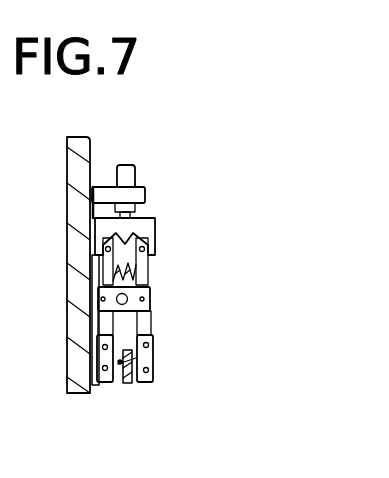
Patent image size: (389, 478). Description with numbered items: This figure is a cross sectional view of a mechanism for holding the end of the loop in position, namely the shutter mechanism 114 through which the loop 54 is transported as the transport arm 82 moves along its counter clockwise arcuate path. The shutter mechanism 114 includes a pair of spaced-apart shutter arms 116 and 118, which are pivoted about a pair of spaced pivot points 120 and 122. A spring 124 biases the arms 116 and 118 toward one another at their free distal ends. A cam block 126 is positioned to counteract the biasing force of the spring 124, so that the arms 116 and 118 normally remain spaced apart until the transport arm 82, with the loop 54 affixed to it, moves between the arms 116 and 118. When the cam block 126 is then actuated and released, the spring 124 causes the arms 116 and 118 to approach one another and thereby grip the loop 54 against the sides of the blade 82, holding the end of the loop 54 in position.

The shutter mechanism 114 is at (158, 213).
The cam block 126 is at (176, 224).
The spring 124 is at (134, 266).
The pivot point 122 is at (146, 299).
The pivot point 120 is at (96, 290).
The shutter arm 116 is at (105, 384).
The shutter arm 118 is at (148, 381).
The transport arm 82 is at (127, 384).
The loop 54 is at (122, 362).